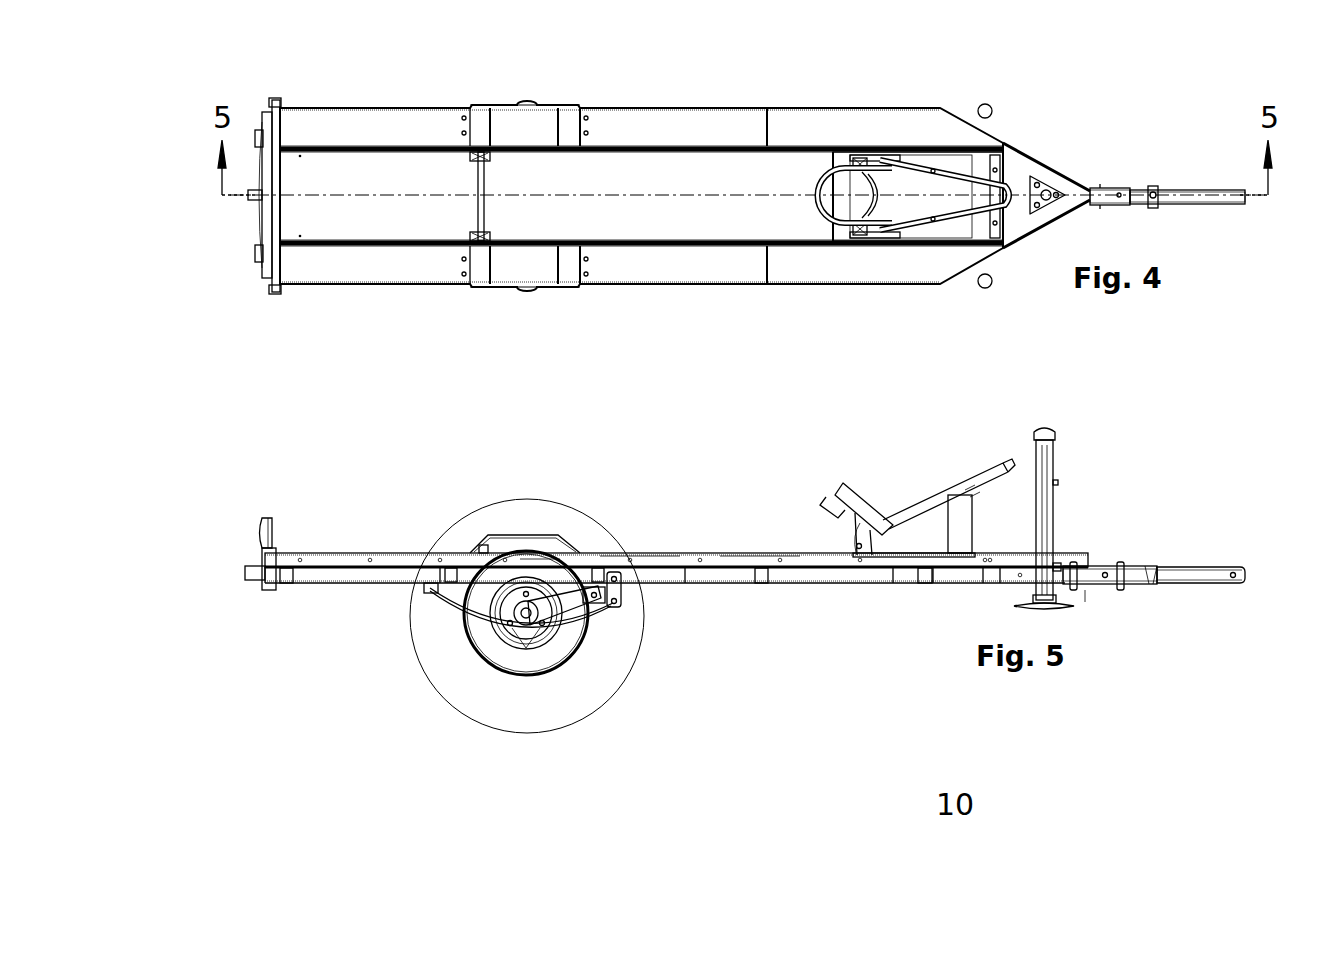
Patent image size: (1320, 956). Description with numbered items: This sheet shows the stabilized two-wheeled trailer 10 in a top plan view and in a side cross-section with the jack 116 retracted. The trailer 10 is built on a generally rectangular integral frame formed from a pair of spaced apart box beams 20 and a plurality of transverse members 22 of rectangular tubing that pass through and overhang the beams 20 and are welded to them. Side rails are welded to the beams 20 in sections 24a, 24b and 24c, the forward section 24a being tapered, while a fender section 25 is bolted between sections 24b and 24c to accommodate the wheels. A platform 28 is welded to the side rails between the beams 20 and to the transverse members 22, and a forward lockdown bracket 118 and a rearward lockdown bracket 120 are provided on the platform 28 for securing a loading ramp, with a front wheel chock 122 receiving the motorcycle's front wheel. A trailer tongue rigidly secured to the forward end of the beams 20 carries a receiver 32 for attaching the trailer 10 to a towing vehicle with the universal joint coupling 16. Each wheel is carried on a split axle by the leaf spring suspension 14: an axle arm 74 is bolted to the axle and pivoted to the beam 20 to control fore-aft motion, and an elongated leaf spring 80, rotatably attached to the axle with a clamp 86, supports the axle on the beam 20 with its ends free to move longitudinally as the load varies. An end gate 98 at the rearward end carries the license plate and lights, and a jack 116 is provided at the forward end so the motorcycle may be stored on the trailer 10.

In FIG. 4, the stabilized two-wheeled trailer 10 is at (986, 50).
In FIG. 5, the stabilized two-wheeled trailer 10 is at (721, 457).
In FIG. 5, the leaf spring suspension 14 is at (488, 676).
In FIG. 4, the universal joint coupling 16 is at (1182, 211).
In FIG. 5, the universal joint coupling 16 is at (1188, 562).
In FIG. 5, the box beams 20 is at (686, 589).
In FIG. 5, the transverse members 22 is at (290, 589).
In FIG. 4, the side rail section 24a is at (827, 270).
In FIG. 4, the side rail section 24b is at (628, 270).
In FIG. 4, the side rail section 24c is at (358, 278).
In FIG. 4, the fender section 25 is at (527, 118).
In FIG. 5, the fender section 25 is at (525, 544).
In FIG. 4, the platform 28 is at (399, 166).
In FIG. 4, the receiver 32 is at (1119, 179).
In FIG. 5, the receiver 32 is at (1115, 557).
In FIG. 5, the axle arm 74 is at (569, 605).
In FIG. 5, the leaf spring 80 is at (614, 619).
In FIG. 5, the clamp 86 is at (523, 640).
In FIG. 4, the end gate 98 is at (262, 233).
In FIG. 5, the end gate 98 is at (274, 517).
In FIG. 5, the jack 116 is at (1057, 453).
In FIG. 4, the forward lockdown bracket 118 is at (837, 155).
In FIG. 4, the rearward lockdown bracket 120 is at (475, 177).
In FIG. 5, the front wheel chock 122 is at (956, 477).